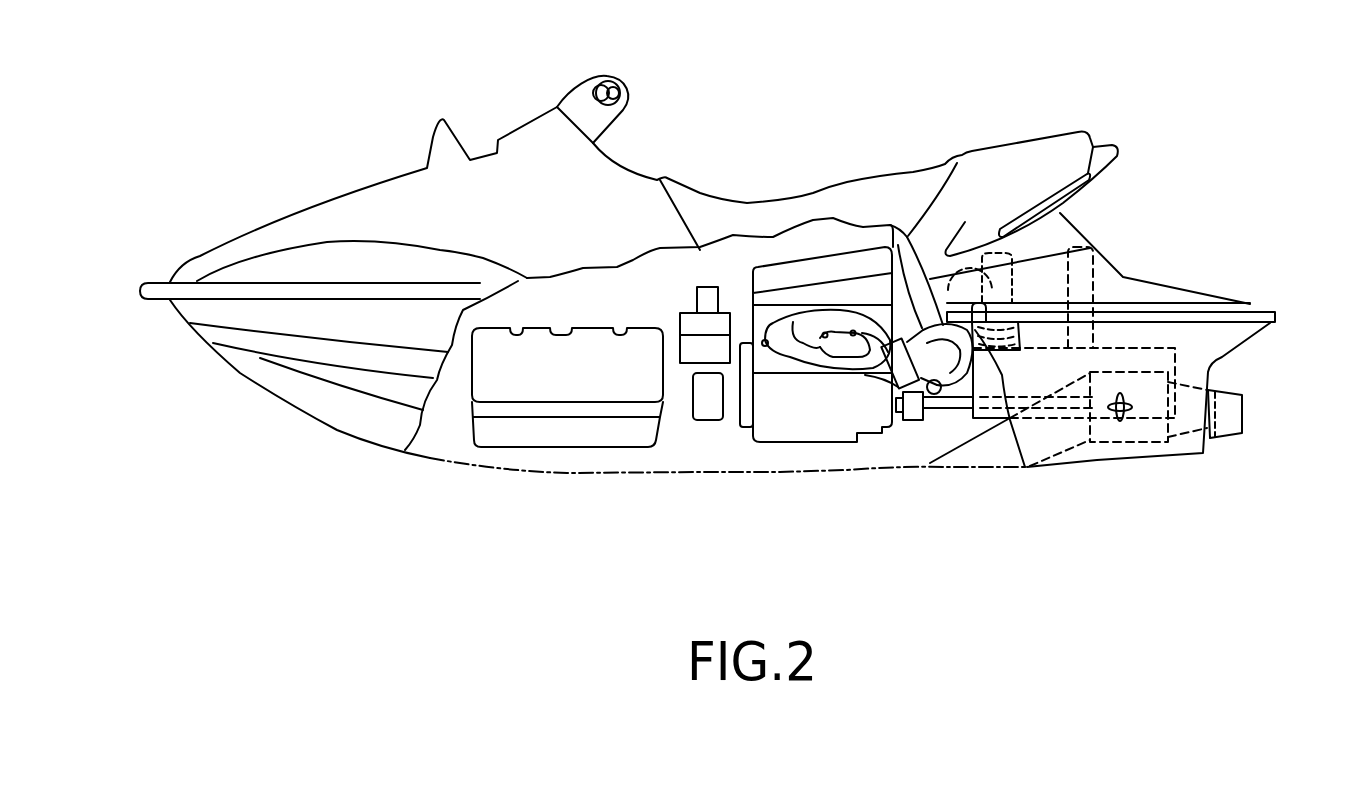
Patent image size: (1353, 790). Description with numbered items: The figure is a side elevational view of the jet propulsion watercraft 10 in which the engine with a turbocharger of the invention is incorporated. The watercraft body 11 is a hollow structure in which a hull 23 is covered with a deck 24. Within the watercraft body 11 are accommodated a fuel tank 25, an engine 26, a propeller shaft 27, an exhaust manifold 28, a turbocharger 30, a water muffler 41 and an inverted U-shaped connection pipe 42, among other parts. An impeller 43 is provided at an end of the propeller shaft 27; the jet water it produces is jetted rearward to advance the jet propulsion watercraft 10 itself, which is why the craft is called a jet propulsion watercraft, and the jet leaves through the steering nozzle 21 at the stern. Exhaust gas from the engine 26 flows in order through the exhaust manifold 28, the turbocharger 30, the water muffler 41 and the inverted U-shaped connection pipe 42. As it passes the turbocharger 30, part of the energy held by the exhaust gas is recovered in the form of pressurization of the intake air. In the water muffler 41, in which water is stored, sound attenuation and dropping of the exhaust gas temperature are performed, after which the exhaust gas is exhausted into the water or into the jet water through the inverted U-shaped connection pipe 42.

The jet propulsion watercraft 10 is at (707, 301).
The watercraft body 11 is at (223, 380).
The steering nozzle 21 is at (1220, 440).
The hull 23 is at (383, 443).
The deck 24 is at (380, 202).
The fuel tank 25 is at (573, 433).
The engine 26 is at (812, 425).
The propeller shaft 27 is at (950, 407).
The exhaust manifold 28 is at (840, 322).
The turbocharger 30 is at (916, 312).
The water muffler 41 is at (1135, 348).
The inverted U-shaped connection pipe 42 is at (1087, 243).
The impeller 43 is at (1133, 443).